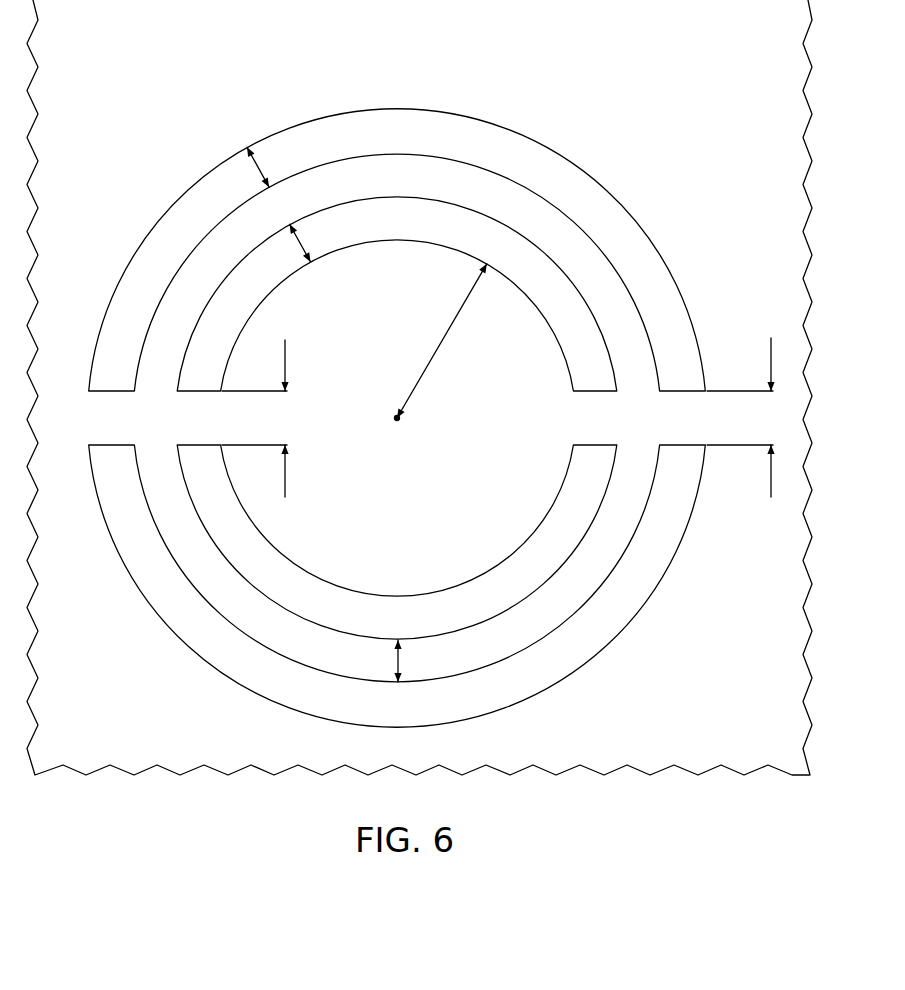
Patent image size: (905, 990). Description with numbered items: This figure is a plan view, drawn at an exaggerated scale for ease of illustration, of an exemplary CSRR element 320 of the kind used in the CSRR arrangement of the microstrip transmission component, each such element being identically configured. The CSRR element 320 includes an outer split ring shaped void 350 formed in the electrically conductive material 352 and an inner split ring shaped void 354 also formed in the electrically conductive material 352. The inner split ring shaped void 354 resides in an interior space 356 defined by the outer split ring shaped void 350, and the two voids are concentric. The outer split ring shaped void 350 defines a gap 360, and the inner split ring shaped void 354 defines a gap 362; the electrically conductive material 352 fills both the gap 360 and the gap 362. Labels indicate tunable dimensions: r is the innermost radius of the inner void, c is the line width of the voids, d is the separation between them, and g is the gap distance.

The CSRR element 320 is at (432, 382).
The outer split ring shaped void 350 is at (523, 151).
The electrically conductive material 352 is at (622, 310).
The inner split ring shaped void 354 is at (403, 606).
The interior space 356 is at (385, 174).
The gap 360 is at (685, 434).
The gap 362 is at (205, 427).